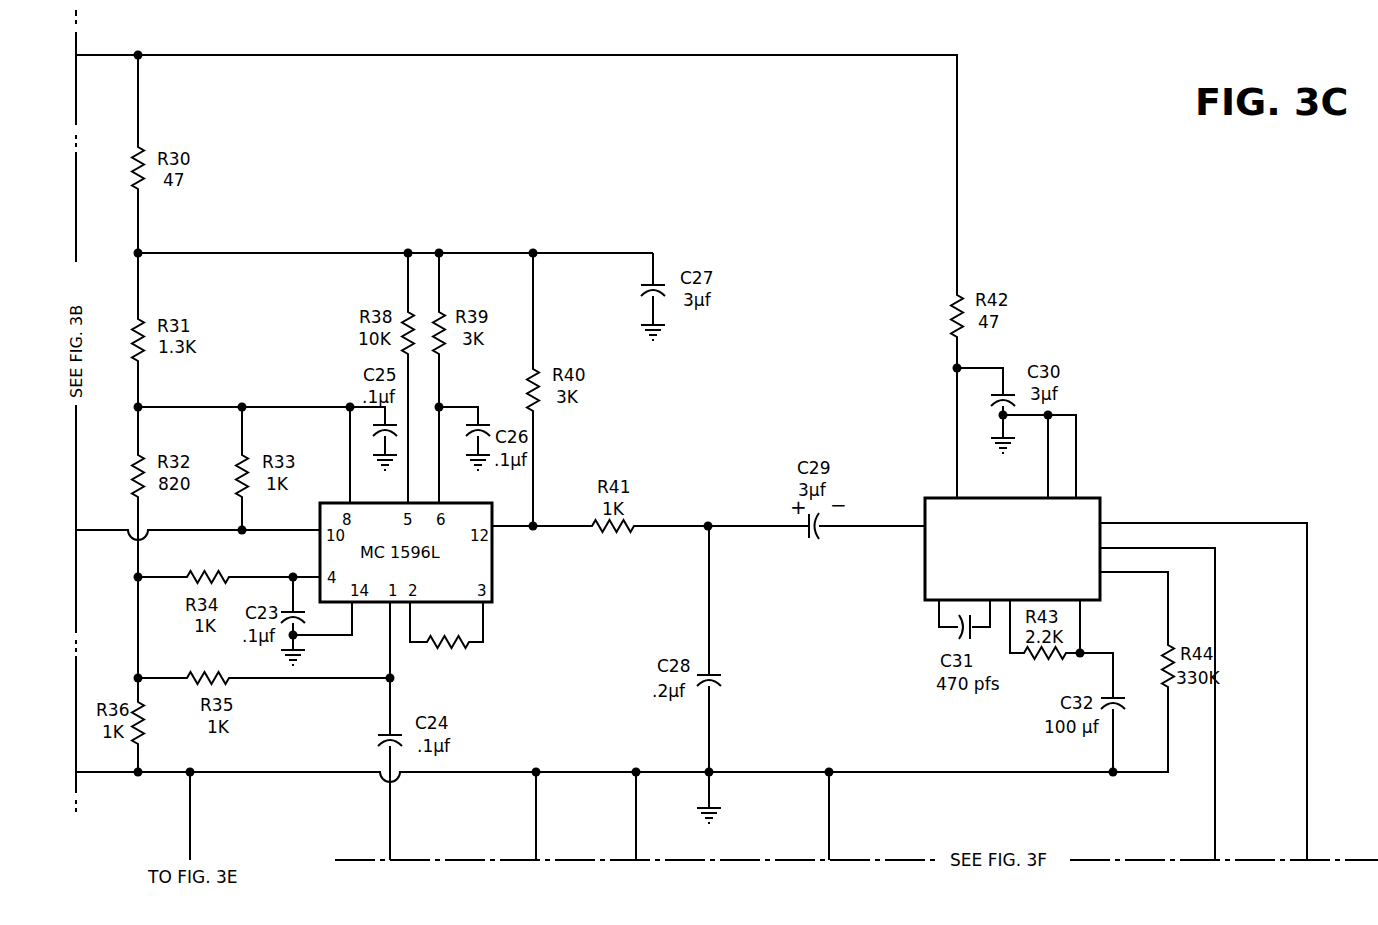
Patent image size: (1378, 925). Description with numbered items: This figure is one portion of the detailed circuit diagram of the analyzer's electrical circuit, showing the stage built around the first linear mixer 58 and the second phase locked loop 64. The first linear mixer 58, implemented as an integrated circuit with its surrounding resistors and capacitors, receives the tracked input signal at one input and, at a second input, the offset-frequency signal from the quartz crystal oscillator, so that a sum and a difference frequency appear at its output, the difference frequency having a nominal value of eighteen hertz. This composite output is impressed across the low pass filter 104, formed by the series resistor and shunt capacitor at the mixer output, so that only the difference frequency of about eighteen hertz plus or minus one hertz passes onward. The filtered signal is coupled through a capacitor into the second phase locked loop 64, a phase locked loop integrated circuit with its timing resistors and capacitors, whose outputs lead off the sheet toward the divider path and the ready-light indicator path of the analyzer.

The first linear mixer 58 is at (425, 240).
The low pass filter 104 is at (684, 507).
The second phase locked loop 64 is at (1122, 493).